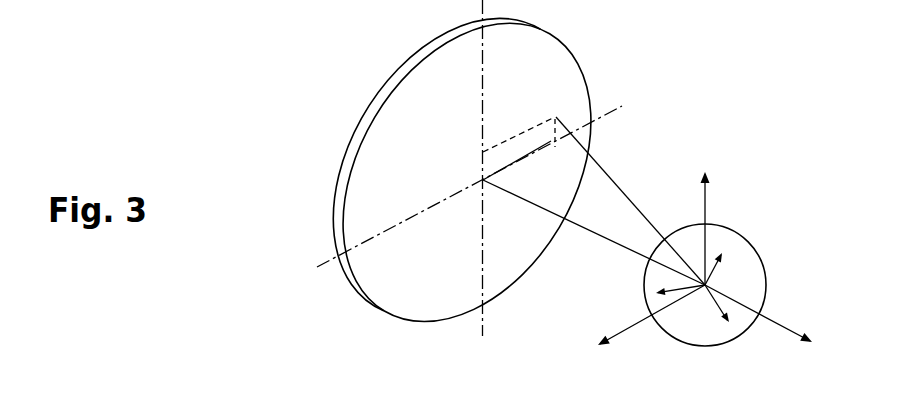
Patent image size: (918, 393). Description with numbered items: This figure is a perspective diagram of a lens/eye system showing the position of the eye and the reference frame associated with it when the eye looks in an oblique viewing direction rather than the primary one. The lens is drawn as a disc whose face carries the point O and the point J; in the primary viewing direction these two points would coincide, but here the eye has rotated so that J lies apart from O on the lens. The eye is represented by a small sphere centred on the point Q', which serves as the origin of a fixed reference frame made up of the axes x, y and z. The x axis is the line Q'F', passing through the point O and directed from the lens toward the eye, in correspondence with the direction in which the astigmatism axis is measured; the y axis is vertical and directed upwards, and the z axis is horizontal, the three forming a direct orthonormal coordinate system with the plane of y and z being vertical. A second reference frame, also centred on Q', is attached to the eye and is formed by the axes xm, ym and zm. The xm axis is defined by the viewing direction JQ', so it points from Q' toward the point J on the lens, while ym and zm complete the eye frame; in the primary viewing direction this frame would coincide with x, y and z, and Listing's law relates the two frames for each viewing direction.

The point O is at (467, 183).
The point J is at (594, 192).
The point Q' O' is at (705, 285).
The x-axis x is at (758, 313).
The y-axis y is at (710, 228).
The z-axis z is at (651, 323).
The xm axis xm is at (710, 305).
The ym axis ym is at (725, 269).
The zm axis zm is at (678, 285).